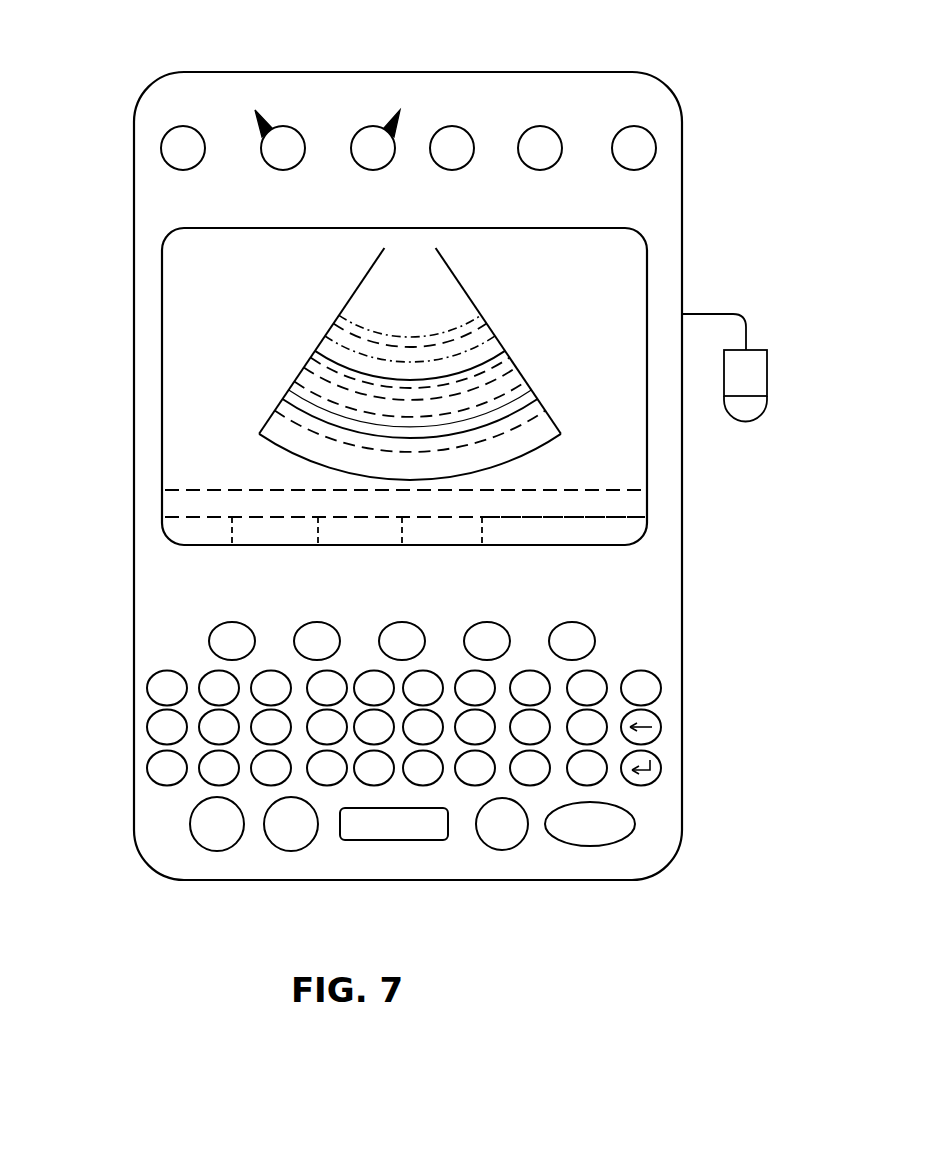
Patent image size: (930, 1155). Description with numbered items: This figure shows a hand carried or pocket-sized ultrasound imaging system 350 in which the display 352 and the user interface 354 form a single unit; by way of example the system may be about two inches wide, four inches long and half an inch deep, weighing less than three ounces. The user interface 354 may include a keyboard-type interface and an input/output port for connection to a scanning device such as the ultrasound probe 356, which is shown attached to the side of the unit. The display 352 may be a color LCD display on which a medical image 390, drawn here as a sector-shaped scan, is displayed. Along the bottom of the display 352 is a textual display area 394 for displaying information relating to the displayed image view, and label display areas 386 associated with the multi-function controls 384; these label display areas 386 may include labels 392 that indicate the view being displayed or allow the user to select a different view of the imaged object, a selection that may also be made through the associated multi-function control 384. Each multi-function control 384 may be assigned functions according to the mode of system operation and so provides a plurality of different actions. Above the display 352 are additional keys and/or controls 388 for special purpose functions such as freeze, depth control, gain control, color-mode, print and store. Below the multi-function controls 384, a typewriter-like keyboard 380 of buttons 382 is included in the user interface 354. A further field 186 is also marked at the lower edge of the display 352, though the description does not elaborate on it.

The pocket-sized ultrasound imaging system 350 is at (155, 72).
The display 352 is at (652, 268).
The user interface 354 is at (710, 495).
The ultrasound probe 356 is at (757, 349).
The typewriter-like keyboard 380 is at (110, 673).
The buttons 382 is at (182, 712).
The multi-function controls 384 is at (422, 609).
The label display areas 386 is at (186, 517).
The keys and/or controls 388 is at (183, 127).
The medical image 390 is at (338, 318).
The labels 392 is at (198, 518).
The textual display area 394 is at (214, 490).
The status field 186 is at (564, 517).